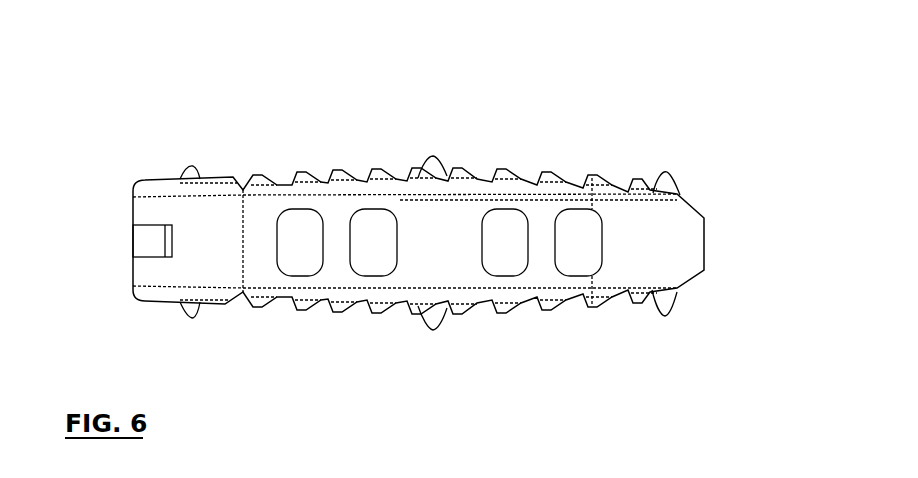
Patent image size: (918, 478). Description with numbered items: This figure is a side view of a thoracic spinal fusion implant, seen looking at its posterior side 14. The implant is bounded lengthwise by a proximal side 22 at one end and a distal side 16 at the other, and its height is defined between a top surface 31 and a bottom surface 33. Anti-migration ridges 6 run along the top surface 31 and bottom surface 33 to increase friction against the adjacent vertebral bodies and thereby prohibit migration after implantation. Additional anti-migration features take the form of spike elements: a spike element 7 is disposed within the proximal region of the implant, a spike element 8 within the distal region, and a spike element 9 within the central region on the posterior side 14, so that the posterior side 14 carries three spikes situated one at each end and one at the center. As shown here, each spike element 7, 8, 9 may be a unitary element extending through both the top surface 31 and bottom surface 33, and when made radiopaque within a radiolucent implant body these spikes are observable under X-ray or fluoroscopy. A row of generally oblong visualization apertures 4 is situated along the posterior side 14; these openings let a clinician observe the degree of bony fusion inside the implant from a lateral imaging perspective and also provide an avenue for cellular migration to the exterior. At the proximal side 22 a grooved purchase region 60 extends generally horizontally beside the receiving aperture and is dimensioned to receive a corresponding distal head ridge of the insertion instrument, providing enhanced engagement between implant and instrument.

The visualization aperture 4 is at (584, 253).
The ridges 6 is at (294, 181).
The spike element 7 is at (198, 177).
The spike element 8 is at (672, 190).
The spike element 9 is at (445, 170).
The posterior side 14 is at (447, 275).
The distal side 16 is at (736, 231).
The proximal side 22 is at (122, 231).
The top surface 31 is at (553, 176).
The bottom surface 33 is at (288, 302).
The grooved purchase region 60 is at (153, 240).